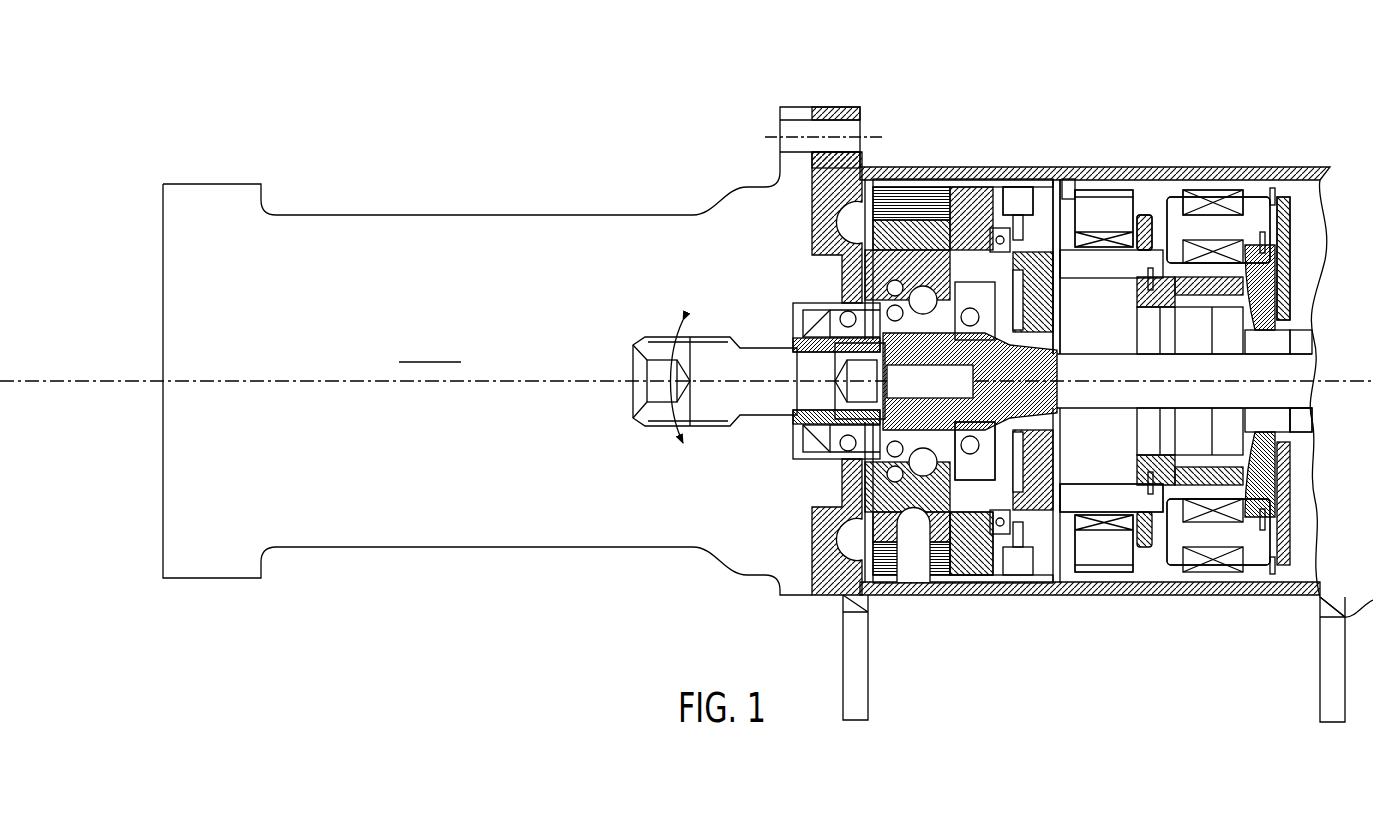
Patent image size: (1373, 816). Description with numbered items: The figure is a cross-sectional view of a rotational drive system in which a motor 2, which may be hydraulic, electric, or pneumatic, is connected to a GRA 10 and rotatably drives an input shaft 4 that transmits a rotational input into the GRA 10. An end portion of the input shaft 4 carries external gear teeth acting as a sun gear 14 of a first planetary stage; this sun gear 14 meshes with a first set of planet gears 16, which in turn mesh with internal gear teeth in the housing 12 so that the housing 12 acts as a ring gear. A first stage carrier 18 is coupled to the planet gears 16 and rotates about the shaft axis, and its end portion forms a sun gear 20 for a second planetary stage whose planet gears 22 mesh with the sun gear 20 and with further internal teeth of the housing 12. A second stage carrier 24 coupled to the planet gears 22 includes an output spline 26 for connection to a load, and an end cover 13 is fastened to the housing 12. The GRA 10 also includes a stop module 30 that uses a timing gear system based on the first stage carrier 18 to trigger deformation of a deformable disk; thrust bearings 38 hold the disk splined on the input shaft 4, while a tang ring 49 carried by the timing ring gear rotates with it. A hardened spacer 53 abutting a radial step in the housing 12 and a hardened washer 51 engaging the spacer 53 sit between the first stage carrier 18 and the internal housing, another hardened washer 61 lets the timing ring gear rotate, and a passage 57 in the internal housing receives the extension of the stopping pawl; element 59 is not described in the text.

The motor 2 is at (318, 213).
The input shaft 4 is at (1013, 393).
The GRA 10 is at (1282, 95).
The housing 12 is at (1178, 597).
The end cover 13 is at (820, 218).
The sun gear 14 is at (1077, 507).
The first set of planet gears 16 is at (1087, 208).
The first stage carrier 18 is at (1142, 217).
The sun gear 20 is at (1205, 250).
The second set of planet gears 22 is at (1225, 190).
The second stage carrier 24 is at (1280, 303).
The output spline 26 is at (1325, 440).
The stop module 30 is at (958, 160).
The thrust bearings 38 is at (872, 334).
The tang ring 49 is at (993, 460).
The hardened washer 51 is at (1060, 187).
The hardened spacer 53 is at (1075, 172).
The passage 57 is at (977, 253).
The slot 59 is at (883, 582).
The hardened washer 61 is at (997, 553).